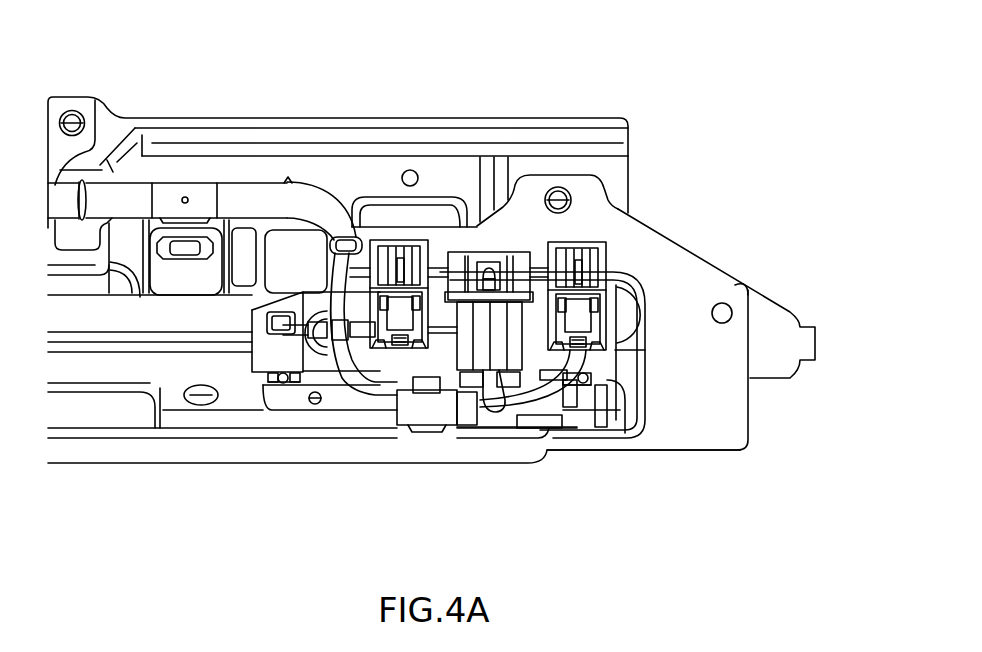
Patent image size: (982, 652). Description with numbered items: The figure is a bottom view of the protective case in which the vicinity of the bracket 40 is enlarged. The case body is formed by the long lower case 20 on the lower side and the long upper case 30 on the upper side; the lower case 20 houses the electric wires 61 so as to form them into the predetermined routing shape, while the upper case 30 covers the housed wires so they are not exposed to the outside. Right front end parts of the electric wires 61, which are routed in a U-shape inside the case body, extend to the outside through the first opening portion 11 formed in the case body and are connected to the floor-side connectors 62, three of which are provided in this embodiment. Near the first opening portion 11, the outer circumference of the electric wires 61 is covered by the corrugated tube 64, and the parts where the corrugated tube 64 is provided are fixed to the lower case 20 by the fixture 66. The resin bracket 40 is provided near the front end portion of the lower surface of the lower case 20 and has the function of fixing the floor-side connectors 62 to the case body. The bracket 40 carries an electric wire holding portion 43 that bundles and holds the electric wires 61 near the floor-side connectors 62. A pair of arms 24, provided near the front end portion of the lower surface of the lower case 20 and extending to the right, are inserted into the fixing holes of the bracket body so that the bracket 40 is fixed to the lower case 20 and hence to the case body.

The first opening portion 11 is at (86, 183).
The lower case 20 is at (688, 244).
The arms 24 is at (283, 380).
The upper case 30 is at (642, 135).
The bracket 40 is at (369, 420).
The electric wire holding portion 43 is at (418, 434).
The electric wires 61 is at (552, 385).
The floor-side connectors 62 is at (570, 247).
The corrugated tube 64 is at (323, 203).
The fixture 66 is at (205, 198).